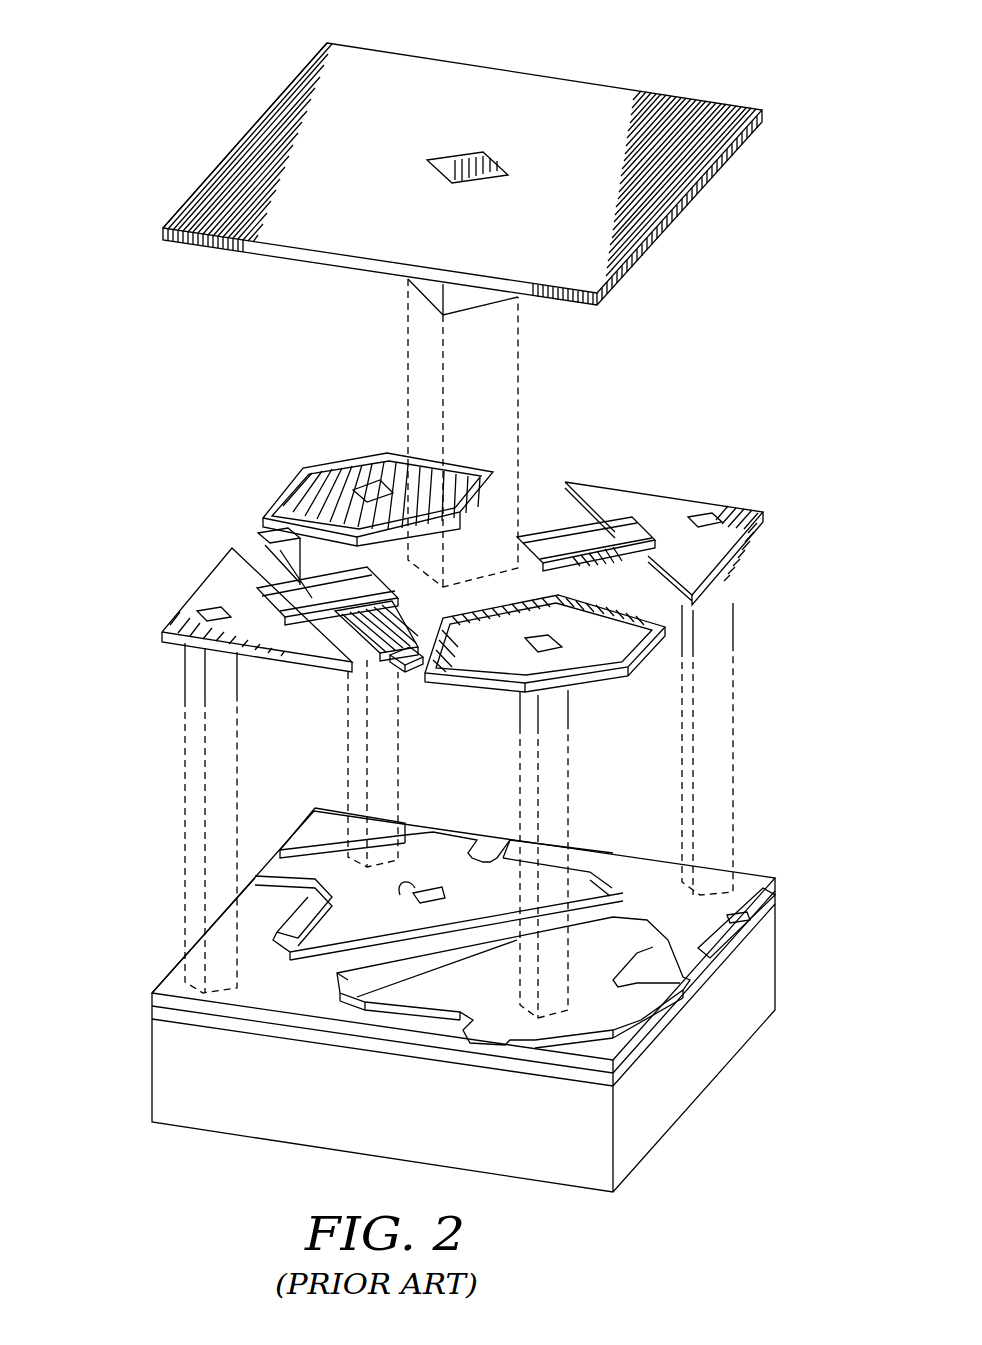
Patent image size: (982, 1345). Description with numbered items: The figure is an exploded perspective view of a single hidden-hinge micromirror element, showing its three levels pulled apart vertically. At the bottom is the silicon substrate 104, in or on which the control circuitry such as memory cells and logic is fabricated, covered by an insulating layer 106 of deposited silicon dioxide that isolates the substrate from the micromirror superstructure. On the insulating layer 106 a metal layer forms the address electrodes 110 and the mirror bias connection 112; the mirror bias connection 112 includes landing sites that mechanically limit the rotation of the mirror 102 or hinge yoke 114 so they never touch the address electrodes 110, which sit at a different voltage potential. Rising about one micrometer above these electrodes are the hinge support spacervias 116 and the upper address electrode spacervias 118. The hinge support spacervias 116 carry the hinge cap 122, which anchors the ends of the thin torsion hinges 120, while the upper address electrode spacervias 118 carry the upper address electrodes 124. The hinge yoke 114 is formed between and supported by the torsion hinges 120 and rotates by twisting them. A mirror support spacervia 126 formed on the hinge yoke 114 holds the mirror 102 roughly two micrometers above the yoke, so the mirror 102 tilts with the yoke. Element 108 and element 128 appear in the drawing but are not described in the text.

The mirror 102 is at (535, 90).
The substrate 104 is at (695, 1058).
The insulating layer 106 is at (150, 1020).
The bias electrode contact 108 is at (400, 888).
The address electrodes 110 is at (332, 872).
The mirror bias connection 112 is at (172, 980).
The hinge yoke 114 is at (538, 505).
The hinge support spacervias 116 is at (200, 682).
The upper address electrode spacervias 118 is at (570, 706).
The torsion hinges 120 is at (315, 592).
The hinge cap 122 is at (222, 578).
The upper address electrodes 124 is at (372, 462).
The mirror support spacervia 126 is at (476, 300).
The connecting tabs 128 is at (690, 620).